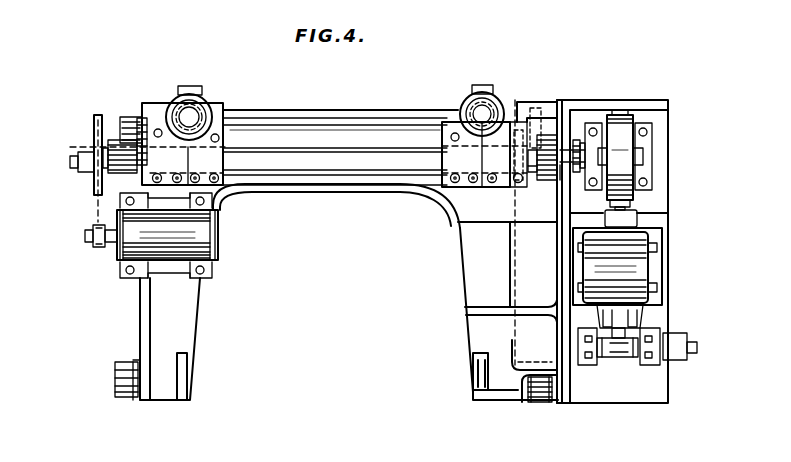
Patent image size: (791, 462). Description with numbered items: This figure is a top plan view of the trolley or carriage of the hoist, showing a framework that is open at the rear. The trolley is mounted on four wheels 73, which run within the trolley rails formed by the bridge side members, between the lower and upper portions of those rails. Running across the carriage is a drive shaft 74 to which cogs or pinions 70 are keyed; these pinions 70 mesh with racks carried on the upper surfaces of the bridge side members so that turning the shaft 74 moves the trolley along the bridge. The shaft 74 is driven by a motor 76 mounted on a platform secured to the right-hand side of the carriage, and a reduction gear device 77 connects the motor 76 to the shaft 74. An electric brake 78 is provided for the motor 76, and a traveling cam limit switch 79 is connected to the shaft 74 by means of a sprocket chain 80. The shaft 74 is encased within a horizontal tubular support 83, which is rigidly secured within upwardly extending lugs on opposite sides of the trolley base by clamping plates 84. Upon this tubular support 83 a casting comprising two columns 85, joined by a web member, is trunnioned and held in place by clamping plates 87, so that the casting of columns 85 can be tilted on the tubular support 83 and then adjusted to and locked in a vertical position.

The cogs or pinions 70 is at (118, 140).
The wheels 73 is at (122, 143).
The drive shaft 74 is at (142, 177).
The motor 76 is at (652, 263).
The reduction gear device 77 is at (622, 128).
The electric brake 78 is at (630, 347).
The traveling cam limit switch 79 is at (200, 240).
The sprocket chain 80 is at (96, 208).
The horizontal tubular support 83 is at (352, 162).
The clamping plates 84 is at (155, 113).
The columns 85 is at (208, 96).
The clamping plates 87 is at (212, 155).